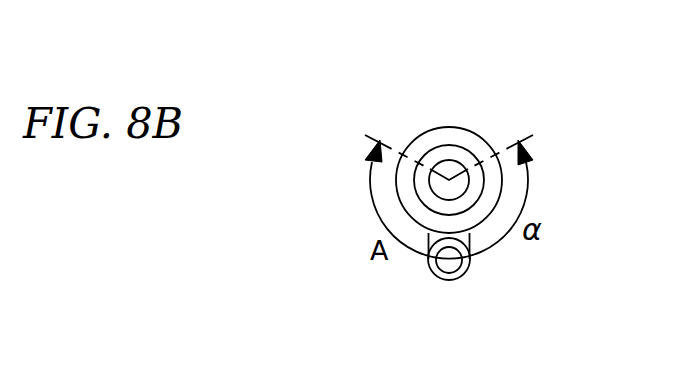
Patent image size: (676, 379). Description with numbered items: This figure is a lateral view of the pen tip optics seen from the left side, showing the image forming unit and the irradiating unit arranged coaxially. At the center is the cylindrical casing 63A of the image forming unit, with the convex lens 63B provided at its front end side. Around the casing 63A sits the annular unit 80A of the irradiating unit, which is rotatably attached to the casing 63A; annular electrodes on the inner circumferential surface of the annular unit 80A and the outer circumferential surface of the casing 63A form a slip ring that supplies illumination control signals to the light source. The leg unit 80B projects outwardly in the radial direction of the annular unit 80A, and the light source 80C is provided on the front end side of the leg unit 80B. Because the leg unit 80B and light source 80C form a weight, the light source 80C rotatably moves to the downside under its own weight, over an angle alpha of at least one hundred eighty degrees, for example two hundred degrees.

The annular unit 80A is at (451, 127).
The cylindrical casing 63A is at (462, 154).
The convex lens 63B is at (450, 167).
The leg unit 80B is at (470, 268).
The light source 80C is at (447, 268).